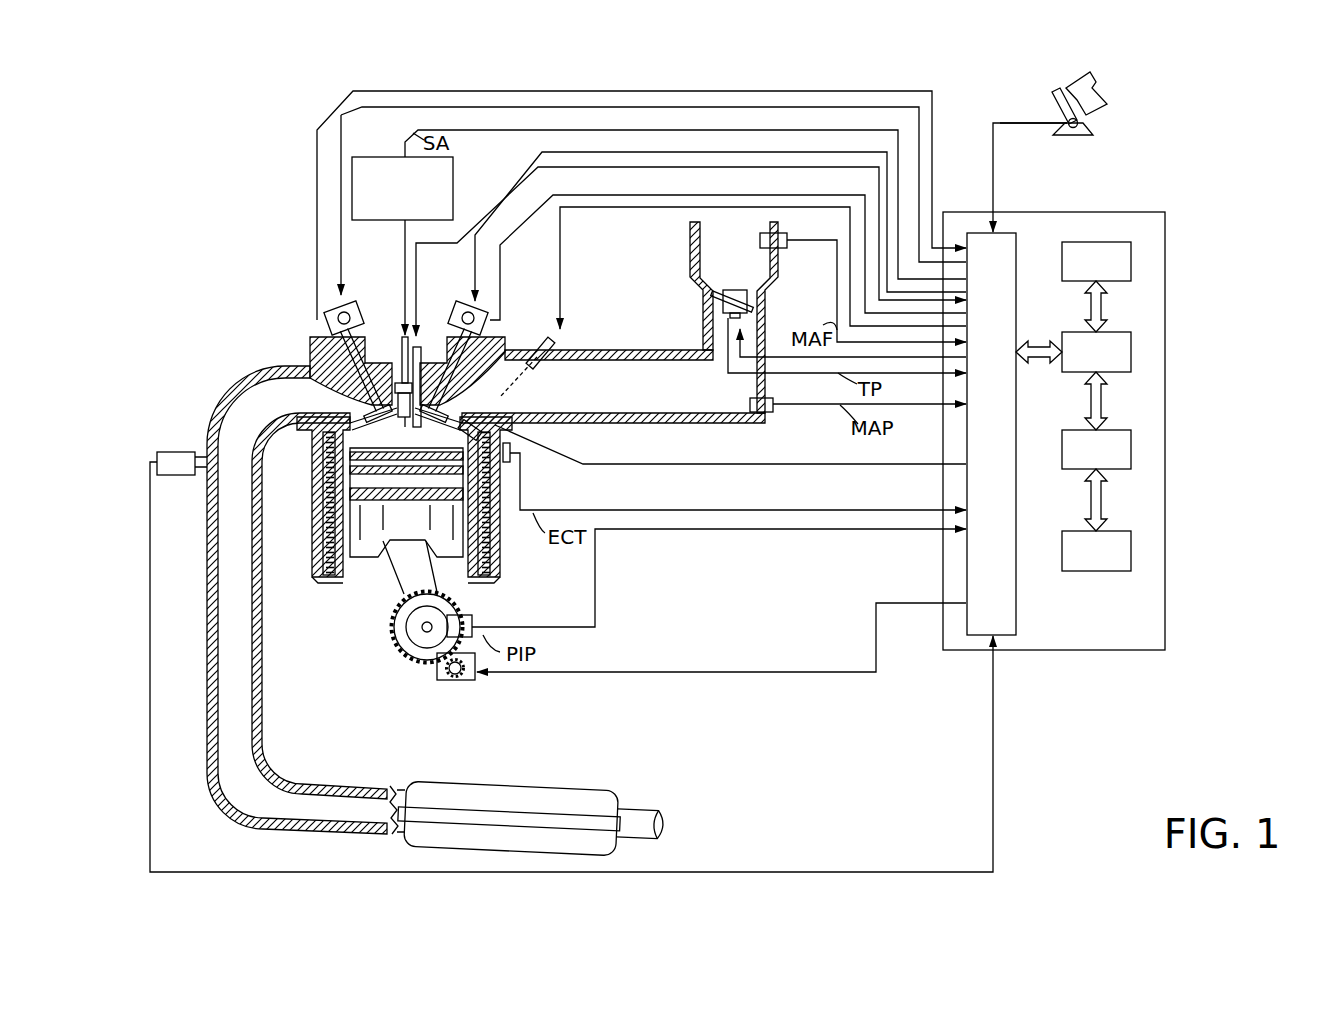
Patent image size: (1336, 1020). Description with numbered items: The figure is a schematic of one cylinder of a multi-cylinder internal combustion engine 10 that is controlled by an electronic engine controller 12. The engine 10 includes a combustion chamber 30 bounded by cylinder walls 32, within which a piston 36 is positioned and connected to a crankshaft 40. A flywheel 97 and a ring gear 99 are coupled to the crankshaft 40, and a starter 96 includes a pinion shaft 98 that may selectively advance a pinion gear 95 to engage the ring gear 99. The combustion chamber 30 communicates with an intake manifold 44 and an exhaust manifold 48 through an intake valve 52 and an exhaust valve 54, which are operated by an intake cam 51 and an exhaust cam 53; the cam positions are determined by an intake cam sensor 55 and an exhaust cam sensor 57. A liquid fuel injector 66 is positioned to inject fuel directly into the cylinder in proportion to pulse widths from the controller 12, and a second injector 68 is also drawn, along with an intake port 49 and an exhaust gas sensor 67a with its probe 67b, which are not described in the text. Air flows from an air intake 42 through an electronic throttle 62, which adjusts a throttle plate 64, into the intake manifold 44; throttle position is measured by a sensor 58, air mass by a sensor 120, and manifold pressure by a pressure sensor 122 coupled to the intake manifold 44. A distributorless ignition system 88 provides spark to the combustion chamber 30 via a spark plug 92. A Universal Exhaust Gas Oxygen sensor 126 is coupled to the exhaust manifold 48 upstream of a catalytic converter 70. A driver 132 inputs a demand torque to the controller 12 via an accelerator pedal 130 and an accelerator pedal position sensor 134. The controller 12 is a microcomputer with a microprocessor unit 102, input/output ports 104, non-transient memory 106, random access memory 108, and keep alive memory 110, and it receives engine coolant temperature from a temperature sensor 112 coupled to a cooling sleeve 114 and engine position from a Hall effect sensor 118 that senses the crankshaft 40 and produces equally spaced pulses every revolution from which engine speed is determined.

The internal combustion engine 10 is at (248, 291).
The electronic engine controller 12 is at (1155, 210).
The combustion chamber 30 is at (327, 523).
The cylinder walls 32 is at (352, 563).
The piston 36 is at (392, 528).
The crankshaft 40 is at (408, 658).
The air intake 42 is at (744, 265).
The intake manifold 44 is at (683, 400).
The exhaust manifold 48 is at (289, 407).
The intake port 49 is at (580, 401).
The intake cam 51 is at (462, 305).
The intake valve 52 is at (470, 402).
The exhaust cam 53 is at (357, 297).
The exhaust valve 54 is at (343, 388).
The intake cam sensor 55 is at (488, 323).
The exhaust cam sensor 57 is at (321, 323).
The throttle position sensor 58 is at (708, 318).
The electronic throttle 62 is at (752, 299).
The throttle plate 64 is at (716, 297).
The liquid fuel injector 66 is at (513, 433).
The exhaust gas sensor 67a is at (532, 344).
The exhaust gas sensor probe 67b is at (528, 373).
The direct fuel injector 68 is at (418, 347).
The catalytic converter 70 is at (422, 783).
The distributorless ignition system 88 is at (366, 157).
The spark plug 92 is at (397, 350).
The pinion gear 95 is at (465, 686).
The starter 96 is at (472, 683).
The flywheel 97 is at (403, 622).
The pinion shaft 98 is at (456, 681).
The ring gear 99 is at (427, 663).
The microprocessor unit 102 is at (1134, 346).
The input/output ports 104 is at (1018, 242).
The non-transient memory 106 is at (1134, 256).
The random access memory 108 is at (1134, 449).
The keep alive memory 110 is at (1134, 549).
The temperature sensor 112 is at (520, 463).
The cooling sleeve 114 is at (487, 530).
The Hall effect sensor 118 is at (477, 607).
The air mass sensor 120 is at (772, 249).
The pressure sensor 122 is at (773, 412).
The Universal Exhaust Gas Oxygen sensor 126 is at (157, 460).
The accelerator pedal 130 is at (1053, 100).
The driver 132 is at (1100, 88).
The accelerator pedal position sensor 134 is at (1087, 123).